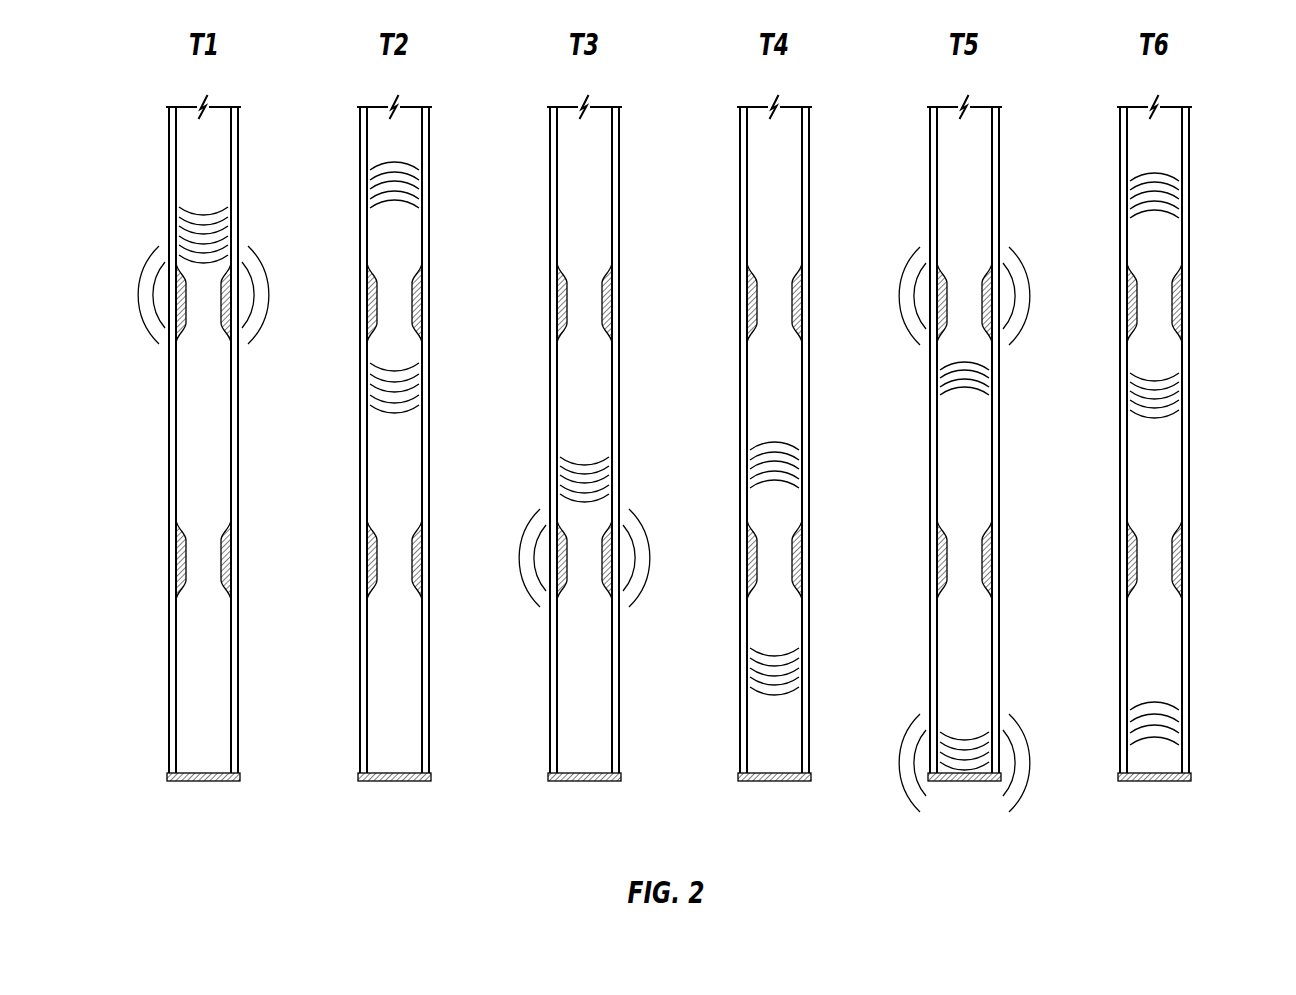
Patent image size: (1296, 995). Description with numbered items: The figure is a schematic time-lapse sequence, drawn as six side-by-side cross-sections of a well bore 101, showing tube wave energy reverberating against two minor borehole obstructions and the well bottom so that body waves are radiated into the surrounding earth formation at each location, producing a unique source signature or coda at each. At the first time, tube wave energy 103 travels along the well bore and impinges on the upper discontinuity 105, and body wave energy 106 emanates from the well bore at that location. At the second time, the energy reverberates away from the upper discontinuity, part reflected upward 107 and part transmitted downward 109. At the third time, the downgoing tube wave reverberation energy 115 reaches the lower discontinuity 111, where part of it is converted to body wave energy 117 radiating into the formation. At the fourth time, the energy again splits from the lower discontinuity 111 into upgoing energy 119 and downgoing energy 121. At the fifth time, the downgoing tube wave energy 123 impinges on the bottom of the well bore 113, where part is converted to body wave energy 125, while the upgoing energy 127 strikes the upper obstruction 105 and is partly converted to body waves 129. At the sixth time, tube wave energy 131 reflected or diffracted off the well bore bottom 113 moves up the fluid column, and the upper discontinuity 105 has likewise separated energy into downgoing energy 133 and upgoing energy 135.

The well bore 101 is at (174, 148).
The tube wave energy 103 is at (177, 216).
The upper discontinuity 105 is at (367, 327).
The body wave energy 106 is at (138, 284).
The reflected tube wave energy 107 is at (372, 173).
The transmitted tube wave energy 109 is at (415, 391).
The lower discontinuity 111 is at (367, 568).
The bottom of the well bore 113 is at (362, 772).
The downgoing tube wave reverberation energy 115 is at (562, 463).
The body wave energy 117 is at (518, 535).
The upgoing tube wave energy 119 is at (750, 462).
The downgoing tube wave energy 121 is at (750, 685).
The downgoing tube wave energy 123 is at (968, 733).
The body wave energy 125 is at (900, 803).
The upgoing energy 127 is at (962, 393).
The body waves 129 is at (917, 250).
The tube wave energy 131 is at (1177, 720).
The downgoing energy 133 is at (1177, 398).
The upgoing energy 135 is at (1177, 197).